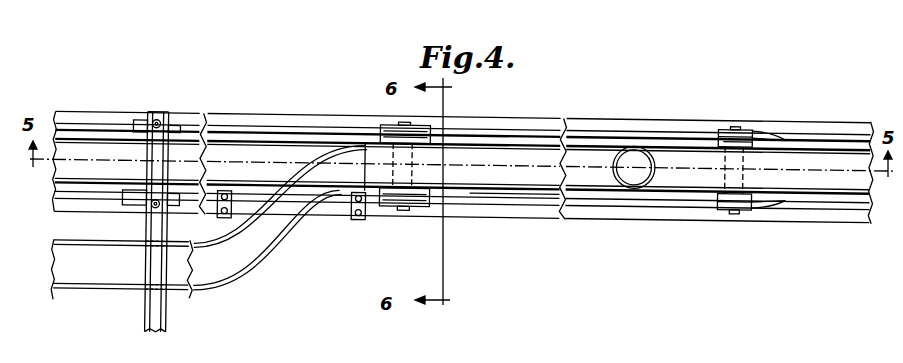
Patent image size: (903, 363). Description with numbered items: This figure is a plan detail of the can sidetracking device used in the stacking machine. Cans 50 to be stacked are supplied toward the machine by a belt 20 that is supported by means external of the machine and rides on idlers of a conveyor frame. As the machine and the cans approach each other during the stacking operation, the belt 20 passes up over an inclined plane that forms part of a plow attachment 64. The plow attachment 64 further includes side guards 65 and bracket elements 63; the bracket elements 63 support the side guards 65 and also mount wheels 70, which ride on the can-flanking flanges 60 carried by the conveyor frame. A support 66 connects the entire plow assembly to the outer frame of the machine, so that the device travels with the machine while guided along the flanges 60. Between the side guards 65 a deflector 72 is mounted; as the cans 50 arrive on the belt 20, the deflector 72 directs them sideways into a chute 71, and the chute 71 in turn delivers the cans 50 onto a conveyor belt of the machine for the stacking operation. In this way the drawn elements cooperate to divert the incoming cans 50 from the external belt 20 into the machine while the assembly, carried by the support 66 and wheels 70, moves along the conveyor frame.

The belt 20 is at (817, 158).
The can 50 is at (655, 166).
The can-flanking flange 60 is at (465, 204).
The bracket element 63 is at (382, 148).
The plow attachment 64 is at (533, 195).
The side guard 65 is at (452, 191).
The support 66 is at (155, 228).
The wheel 70 is at (171, 121).
The chute 71 is at (258, 257).
The deflector 72 is at (288, 164).